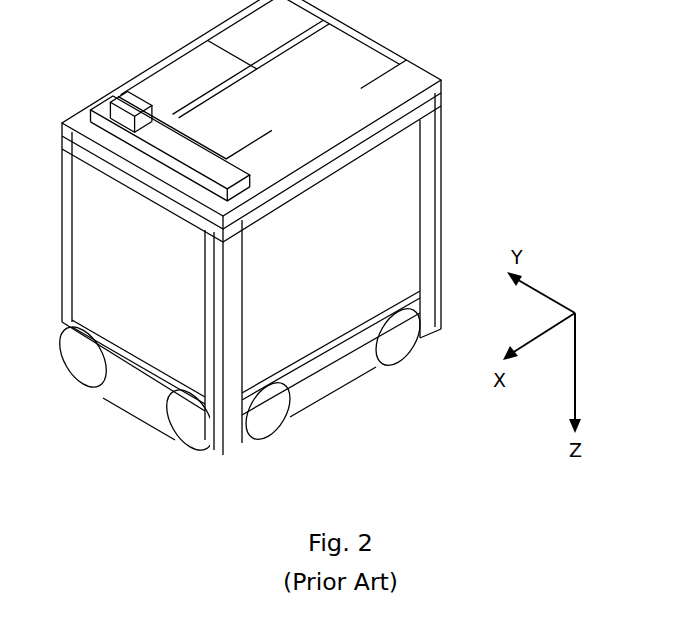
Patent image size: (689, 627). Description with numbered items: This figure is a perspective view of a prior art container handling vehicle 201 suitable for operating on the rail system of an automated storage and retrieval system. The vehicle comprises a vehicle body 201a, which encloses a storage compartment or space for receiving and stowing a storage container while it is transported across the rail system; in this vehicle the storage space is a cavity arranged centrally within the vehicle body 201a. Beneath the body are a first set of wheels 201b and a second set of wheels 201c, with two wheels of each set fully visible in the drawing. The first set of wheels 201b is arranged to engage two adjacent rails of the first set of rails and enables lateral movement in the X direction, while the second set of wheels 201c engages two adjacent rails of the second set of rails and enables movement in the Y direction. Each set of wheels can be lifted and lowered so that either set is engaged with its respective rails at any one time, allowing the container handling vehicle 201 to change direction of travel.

The container handling vehicle 201 is at (495, 195).
The vehicle body 201a is at (153, 88).
The first set of wheels 201b is at (381, 402).
The second set of wheels 201c is at (100, 423).